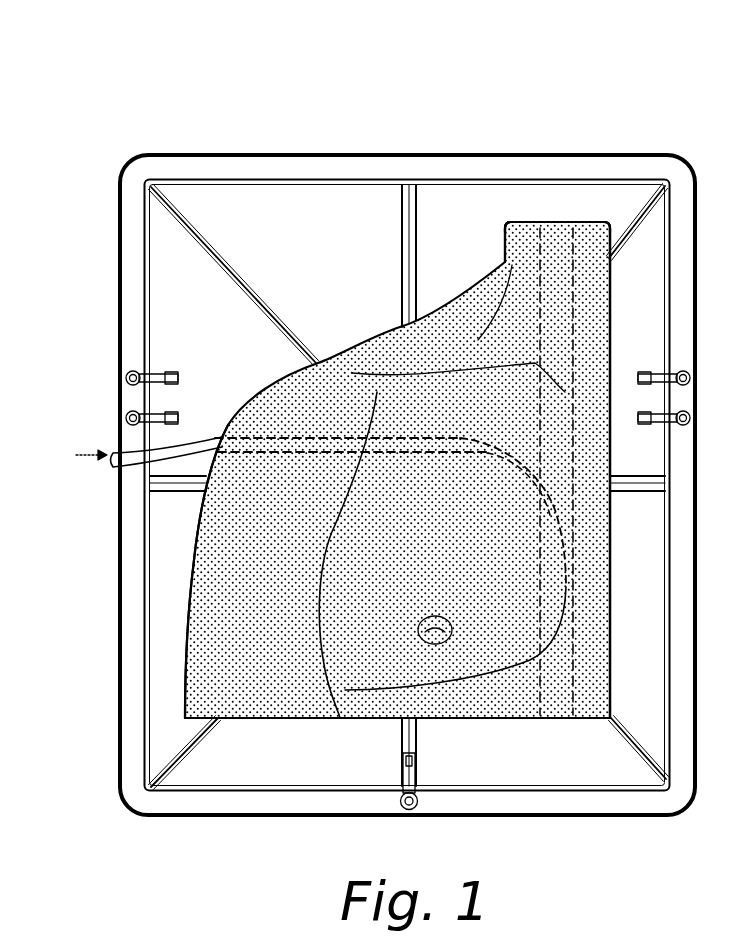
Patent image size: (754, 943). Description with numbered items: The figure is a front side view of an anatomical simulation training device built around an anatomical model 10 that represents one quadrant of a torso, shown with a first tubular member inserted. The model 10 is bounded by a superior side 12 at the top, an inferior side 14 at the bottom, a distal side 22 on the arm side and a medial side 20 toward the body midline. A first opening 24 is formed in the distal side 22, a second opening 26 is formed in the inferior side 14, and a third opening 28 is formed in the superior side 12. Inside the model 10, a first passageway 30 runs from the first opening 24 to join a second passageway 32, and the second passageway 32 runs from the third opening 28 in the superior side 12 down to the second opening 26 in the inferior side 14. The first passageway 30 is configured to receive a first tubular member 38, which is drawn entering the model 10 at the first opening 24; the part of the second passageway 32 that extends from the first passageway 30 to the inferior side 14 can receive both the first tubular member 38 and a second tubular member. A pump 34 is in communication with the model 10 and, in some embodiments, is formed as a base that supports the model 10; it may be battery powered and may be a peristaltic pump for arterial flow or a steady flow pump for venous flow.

The anatomical model 10 is at (160, 88).
The superior side 12 is at (388, 328).
The inferior side 14 is at (290, 720).
The medial side 20 is at (612, 602).
The distal side 22 is at (185, 663).
The first opening 24 is at (224, 440).
The second opening 26 is at (550, 725).
The third opening 28 is at (538, 218).
The first passageway 30 is at (292, 437).
The second passageway 32 is at (590, 226).
The pump 34 is at (167, 828).
The first tubular member 38 is at (132, 457).